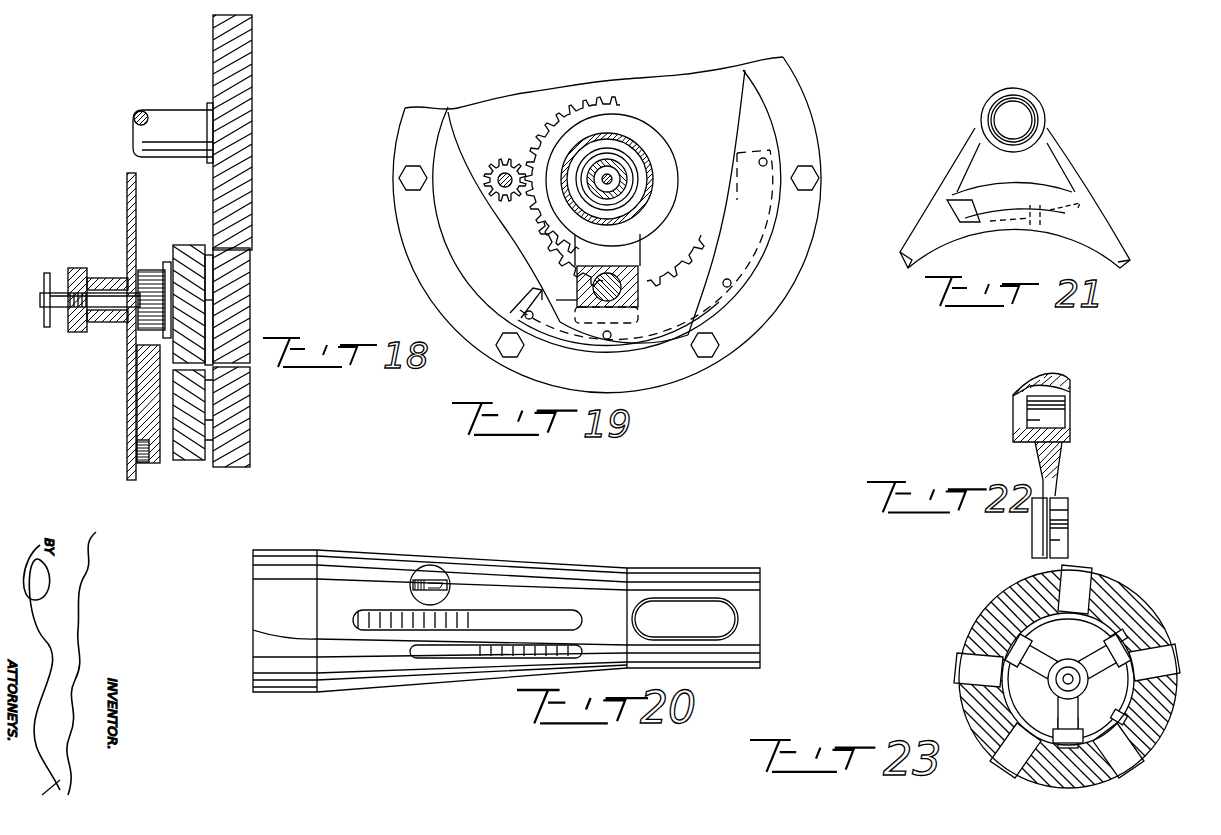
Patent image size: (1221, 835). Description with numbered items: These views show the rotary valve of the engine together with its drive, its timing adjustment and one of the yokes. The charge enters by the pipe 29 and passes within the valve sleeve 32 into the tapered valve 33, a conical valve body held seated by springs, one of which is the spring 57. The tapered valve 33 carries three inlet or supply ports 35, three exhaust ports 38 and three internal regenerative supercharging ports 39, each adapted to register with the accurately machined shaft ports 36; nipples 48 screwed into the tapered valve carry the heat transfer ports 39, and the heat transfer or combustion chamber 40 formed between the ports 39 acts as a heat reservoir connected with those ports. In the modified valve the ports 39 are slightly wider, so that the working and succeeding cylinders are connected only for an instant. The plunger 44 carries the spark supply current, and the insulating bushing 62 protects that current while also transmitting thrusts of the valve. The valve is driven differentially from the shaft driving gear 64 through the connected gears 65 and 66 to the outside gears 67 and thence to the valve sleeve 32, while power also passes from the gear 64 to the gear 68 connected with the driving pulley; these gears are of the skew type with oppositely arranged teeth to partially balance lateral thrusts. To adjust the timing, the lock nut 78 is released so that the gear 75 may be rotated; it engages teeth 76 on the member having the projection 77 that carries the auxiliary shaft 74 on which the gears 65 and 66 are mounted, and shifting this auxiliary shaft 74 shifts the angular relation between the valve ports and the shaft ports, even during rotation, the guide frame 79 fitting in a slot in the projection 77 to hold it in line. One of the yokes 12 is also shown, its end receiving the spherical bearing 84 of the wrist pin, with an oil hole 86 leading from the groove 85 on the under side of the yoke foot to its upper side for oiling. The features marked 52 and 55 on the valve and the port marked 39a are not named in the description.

In FIG. 21, the yoke 12 is at (985, 165).
In FIG. 22, the yoke 12 is at (1062, 460).
In FIG. 19, the pipe 29 is at (590, 122).
In FIG. 20, the valve sleeve 32 is at (279, 551).
In FIG. 20, the tapered valve 33 is at (525, 582).
In FIG. 23, the tapered valve 33 is at (1112, 596).
In FIG. 20, the inlet ports 35 is at (520, 620).
In FIG. 23, the inlet ports 35 is at (1010, 672).
In FIG. 23, the shaft ports 36 is at (978, 640).
In FIG. 20, the exhaust ports 38 is at (440, 660).
In FIG. 23, the exhaust ports 38 is at (1042, 585).
In FIG. 20, the internal regenerative supercharging ports 39 is at (425, 580).
In FIG. 23, the pocket 39a is at (1002, 622).
In FIG. 23, the heat transfer or combustion chamber 40 is at (1048, 686).
In FIG. 19, the plunger 44 is at (616, 178).
In FIG. 20, the nipples 48 is at (437, 580).
In FIG. 23, the nipples 48 is at (1118, 622).
In FIG. 20, the oval slot 52 is at (725, 620).
In FIG. 20, the cylindrical shaft portion 55 is at (696, 578).
In FIG. 19, the spring 57 is at (625, 145).
In FIG. 19, the insulating bushing 62 is at (622, 152).
In FIG. 18, the shaft driving gear 64 is at (252, 268).
In FIG. 18, the gear 65 is at (240, 418).
In FIG. 18, the gear 66 is at (185, 440).
In FIG. 19, the gear 66 is at (549, 250).
In FIG. 18, the outside gears 67 is at (183, 245).
In FIG. 18, the gear 68 is at (245, 204).
In FIG. 19, the auxiliary shaft 74 is at (640, 275).
In FIG. 18, the gear 75 is at (150, 262).
In FIG. 19, the gear 75 is at (492, 160).
In FIG. 19, the teeth 76 is at (550, 136).
In FIG. 19, the projection 77 is at (568, 272).
In FIG. 18, the lock nut 78 is at (73, 268).
In FIG. 18, the guide frame 79 is at (137, 444).
In FIG. 19, the guide frame 79 is at (540, 290).
In FIG. 21, the spherical bearing 84 is at (998, 112).
In FIG. 22, the spherical bearing 84 is at (1036, 396).
In FIG. 21, the groove 85 is at (1005, 222).
In FIG. 21, the oil hole 86 is at (1032, 225).